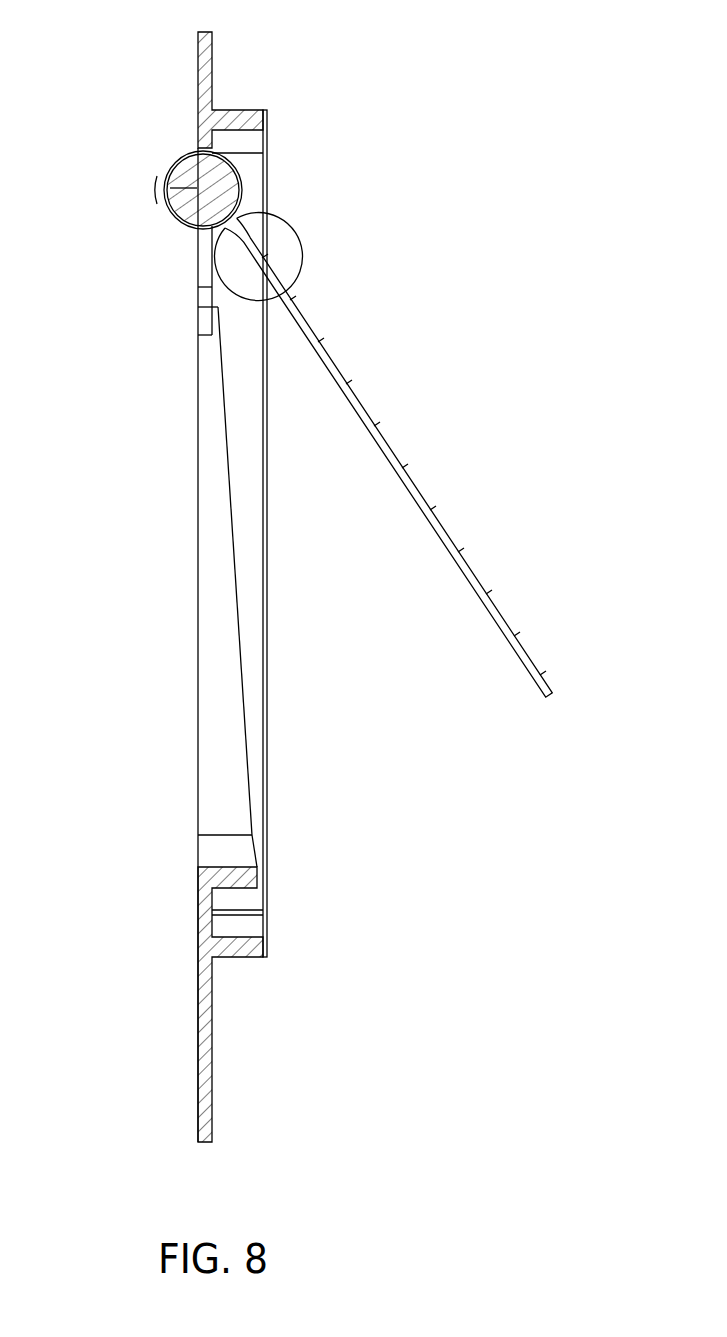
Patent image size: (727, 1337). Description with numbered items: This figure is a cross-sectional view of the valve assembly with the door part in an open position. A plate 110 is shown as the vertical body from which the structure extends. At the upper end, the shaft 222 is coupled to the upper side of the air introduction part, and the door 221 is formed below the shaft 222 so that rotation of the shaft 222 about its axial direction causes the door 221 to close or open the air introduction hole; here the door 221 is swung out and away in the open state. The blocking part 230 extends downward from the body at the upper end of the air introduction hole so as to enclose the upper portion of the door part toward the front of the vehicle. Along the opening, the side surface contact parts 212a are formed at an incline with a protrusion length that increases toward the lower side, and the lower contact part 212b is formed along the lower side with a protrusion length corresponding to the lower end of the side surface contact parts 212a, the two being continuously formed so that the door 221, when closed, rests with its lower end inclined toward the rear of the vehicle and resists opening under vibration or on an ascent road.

The plate 110 is at (212, 45).
The side surface contact parts 212a is at (218, 745).
The lower contact part 212b is at (206, 870).
The door 221 is at (342, 384).
The shaft 222 is at (165, 202).
The blocking part 230 is at (175, 153).